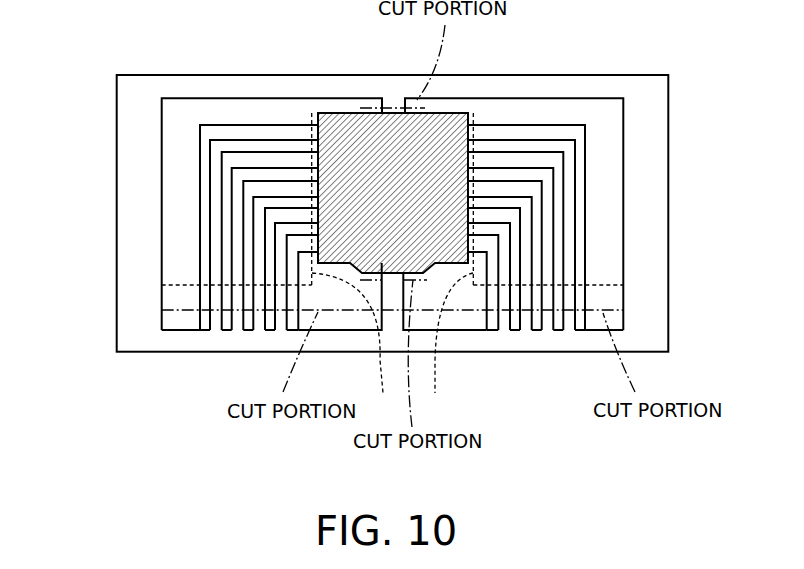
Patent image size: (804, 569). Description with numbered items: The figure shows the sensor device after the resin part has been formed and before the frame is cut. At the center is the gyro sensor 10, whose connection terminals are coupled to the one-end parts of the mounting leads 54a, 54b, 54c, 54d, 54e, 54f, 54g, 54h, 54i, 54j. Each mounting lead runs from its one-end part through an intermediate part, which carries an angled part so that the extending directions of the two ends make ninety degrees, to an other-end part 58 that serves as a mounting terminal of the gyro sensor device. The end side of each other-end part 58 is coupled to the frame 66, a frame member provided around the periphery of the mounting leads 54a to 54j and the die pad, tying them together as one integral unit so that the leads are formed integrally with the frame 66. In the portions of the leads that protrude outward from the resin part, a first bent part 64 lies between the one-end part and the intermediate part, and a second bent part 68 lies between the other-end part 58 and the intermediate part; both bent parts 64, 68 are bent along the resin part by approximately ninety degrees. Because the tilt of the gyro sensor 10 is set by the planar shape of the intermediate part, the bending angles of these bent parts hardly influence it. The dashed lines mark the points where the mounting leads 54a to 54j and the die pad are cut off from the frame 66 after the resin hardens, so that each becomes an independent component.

The gyro sensor 10 is at (449, 113).
The mounting lead 54a is at (270, 122).
The mounting lead 54b is at (257, 150).
The mounting lead 54c is at (267, 178).
The mounting lead 54d is at (263, 232).
The mounting lead 54e is at (285, 275).
The mounting lead 54f is at (513, 124).
The mounting lead 54g is at (528, 150).
The mounting lead 54h is at (528, 178).
The mounting lead 54i is at (523, 235).
The mounting lead 54j is at (501, 260).
The other-end part 58 is at (210, 305).
The first bent part 64 is at (392, 348).
The frame 66 is at (657, 286).
The second bent part 68 is at (183, 283).